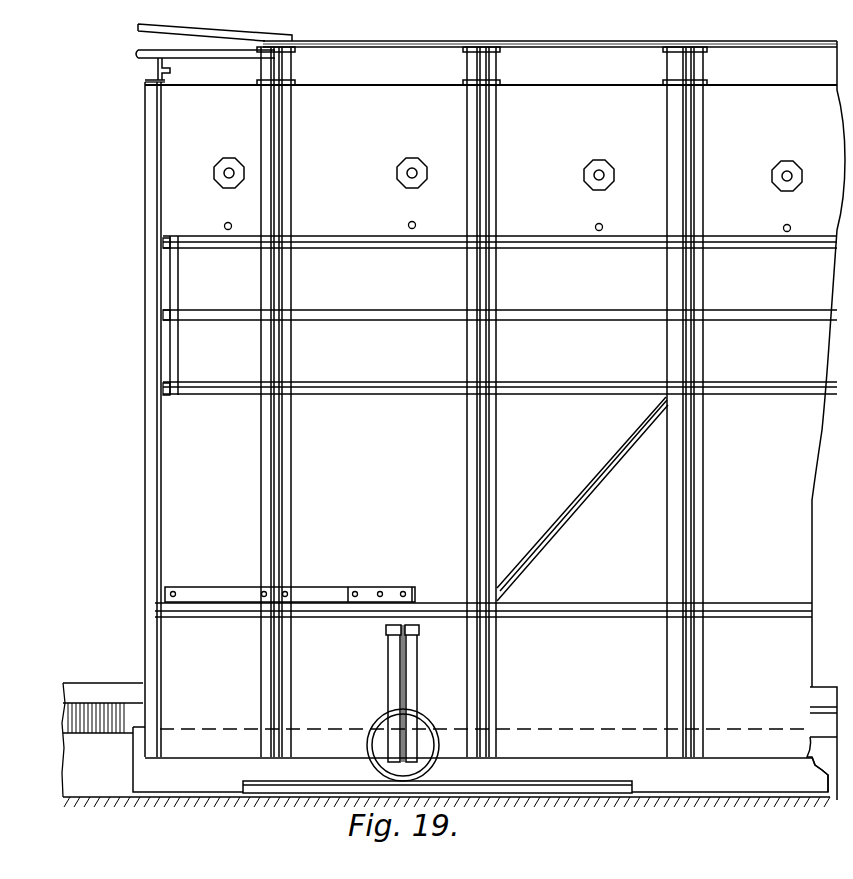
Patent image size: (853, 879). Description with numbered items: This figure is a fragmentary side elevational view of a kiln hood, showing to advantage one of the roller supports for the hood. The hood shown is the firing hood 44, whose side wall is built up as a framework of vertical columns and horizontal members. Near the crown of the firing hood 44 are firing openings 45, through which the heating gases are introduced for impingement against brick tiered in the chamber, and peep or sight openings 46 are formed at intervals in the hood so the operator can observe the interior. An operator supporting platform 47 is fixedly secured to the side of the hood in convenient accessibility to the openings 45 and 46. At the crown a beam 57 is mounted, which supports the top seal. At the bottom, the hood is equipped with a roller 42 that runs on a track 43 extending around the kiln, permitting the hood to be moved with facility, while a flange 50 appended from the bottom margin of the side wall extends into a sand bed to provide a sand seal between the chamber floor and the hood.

The roller 42 is at (376, 727).
The track 43 is at (256, 785).
The firing hood 44 is at (593, 153).
The firing opening 45 is at (229, 168).
The peep or sight opening 46 is at (227, 230).
The operator supporting platform 47 is at (400, 374).
The flange 50 is at (133, 769).
The beam 57 is at (195, 55).